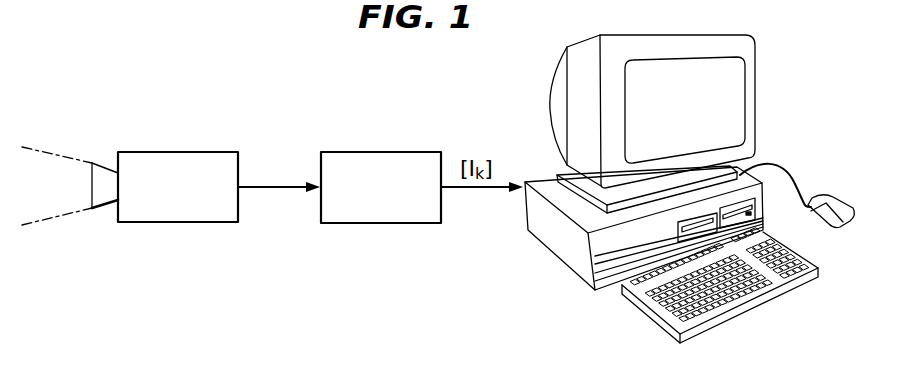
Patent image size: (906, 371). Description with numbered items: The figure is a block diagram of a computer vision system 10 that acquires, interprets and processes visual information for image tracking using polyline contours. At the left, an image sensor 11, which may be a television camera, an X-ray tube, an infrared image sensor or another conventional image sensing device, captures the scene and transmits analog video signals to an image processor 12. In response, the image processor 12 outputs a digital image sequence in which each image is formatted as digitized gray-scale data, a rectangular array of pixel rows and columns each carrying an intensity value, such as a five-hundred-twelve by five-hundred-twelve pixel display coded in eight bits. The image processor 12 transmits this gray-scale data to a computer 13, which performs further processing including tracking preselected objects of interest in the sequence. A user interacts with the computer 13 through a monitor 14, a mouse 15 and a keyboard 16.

The computer vision system 10 is at (677, 189).
The image sensor 11 is at (190, 222).
The image processor 12 is at (388, 223).
The computer 13 is at (558, 248).
The monitor 14 is at (578, 125).
The mouse 15 is at (843, 200).
The keyboard 16 is at (645, 305).